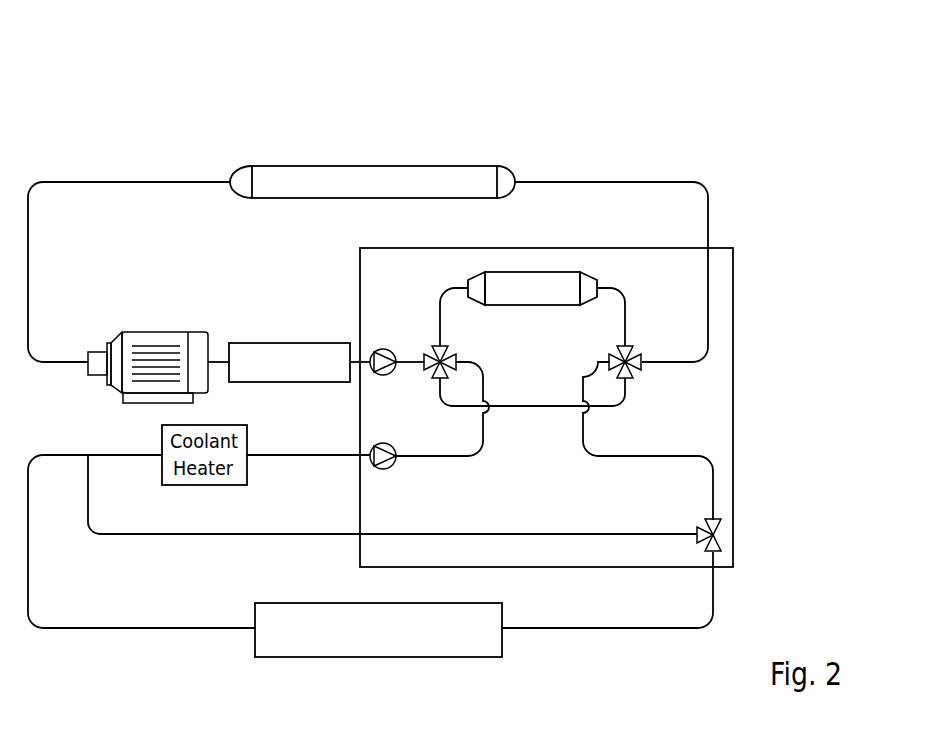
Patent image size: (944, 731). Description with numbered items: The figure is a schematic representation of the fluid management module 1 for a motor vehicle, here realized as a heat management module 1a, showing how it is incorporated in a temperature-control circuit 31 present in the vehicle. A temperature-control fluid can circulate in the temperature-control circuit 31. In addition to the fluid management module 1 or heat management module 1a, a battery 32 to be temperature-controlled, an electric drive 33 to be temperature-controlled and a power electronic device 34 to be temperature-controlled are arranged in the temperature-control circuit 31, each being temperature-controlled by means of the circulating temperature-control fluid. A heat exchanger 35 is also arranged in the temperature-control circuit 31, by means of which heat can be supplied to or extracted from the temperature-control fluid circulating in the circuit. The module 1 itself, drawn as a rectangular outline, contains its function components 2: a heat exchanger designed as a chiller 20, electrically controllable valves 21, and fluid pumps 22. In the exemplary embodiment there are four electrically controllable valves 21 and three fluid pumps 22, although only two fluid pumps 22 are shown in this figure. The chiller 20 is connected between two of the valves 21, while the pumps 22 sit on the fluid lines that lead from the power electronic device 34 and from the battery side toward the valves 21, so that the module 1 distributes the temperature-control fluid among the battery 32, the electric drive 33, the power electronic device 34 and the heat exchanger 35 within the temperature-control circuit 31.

The fluid management module 1 is at (611, 407).
The heat management module 1a is at (745, 393).
The function components 2 is at (586, 411).
The chiller 20 is at (532, 308).
The electrically controllable valves 21 is at (428, 380).
The fluid pumps 22 is at (382, 347).
The temperature-control circuit 31 is at (746, 170).
The battery 32 is at (304, 601).
The electric drive 33 is at (155, 331).
The power electronic device 34 is at (289, 342).
The heat exchanger 35 is at (376, 165).